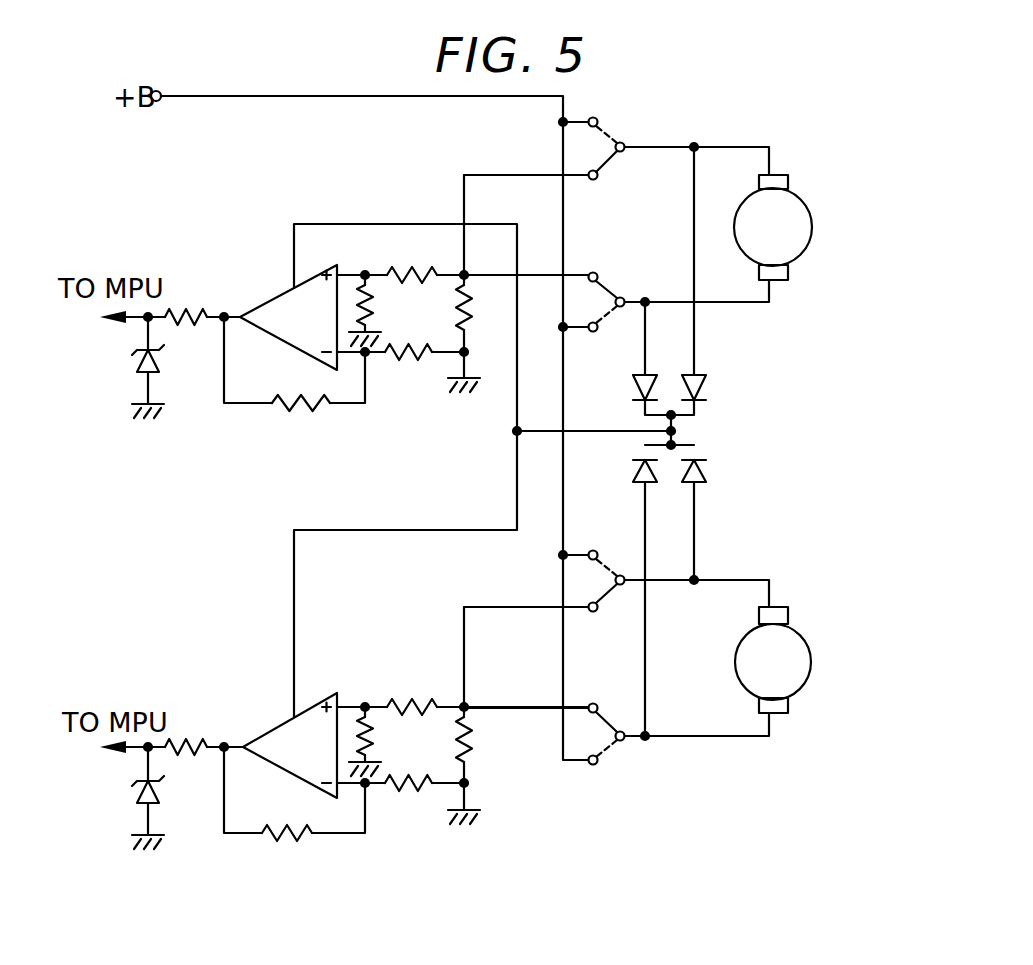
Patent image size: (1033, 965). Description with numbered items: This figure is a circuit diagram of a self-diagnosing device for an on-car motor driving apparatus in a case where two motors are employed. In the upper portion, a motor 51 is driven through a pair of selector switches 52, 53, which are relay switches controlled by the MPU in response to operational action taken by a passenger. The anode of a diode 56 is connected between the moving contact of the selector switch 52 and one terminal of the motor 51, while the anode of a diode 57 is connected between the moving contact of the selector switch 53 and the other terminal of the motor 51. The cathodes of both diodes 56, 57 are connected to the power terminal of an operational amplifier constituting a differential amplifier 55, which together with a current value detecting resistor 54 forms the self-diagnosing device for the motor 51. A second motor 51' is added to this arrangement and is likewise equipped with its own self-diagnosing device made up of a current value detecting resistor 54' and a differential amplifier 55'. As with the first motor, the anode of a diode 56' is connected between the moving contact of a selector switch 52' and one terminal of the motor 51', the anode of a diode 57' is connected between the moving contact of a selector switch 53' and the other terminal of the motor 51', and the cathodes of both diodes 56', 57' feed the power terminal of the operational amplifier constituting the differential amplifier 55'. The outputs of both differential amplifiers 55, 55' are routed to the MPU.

The motor 51 is at (759, 218).
The motor 51' is at (747, 660).
The selector switch 52 is at (566, 132).
The selector switch 52' is at (551, 558).
The selector switch 53 is at (604, 284).
The selector switch 53' is at (547, 704).
The current value detecting resistor 54 is at (485, 318).
The current value detecting resistor 54' is at (498, 745).
The differential amplifier 55 is at (281, 312).
The differential amplifier 55' is at (286, 735).
The diode 56 is at (725, 381).
The diode 56' is at (729, 465).
The diode 57 is at (617, 381).
The diode 57' is at (616, 465).